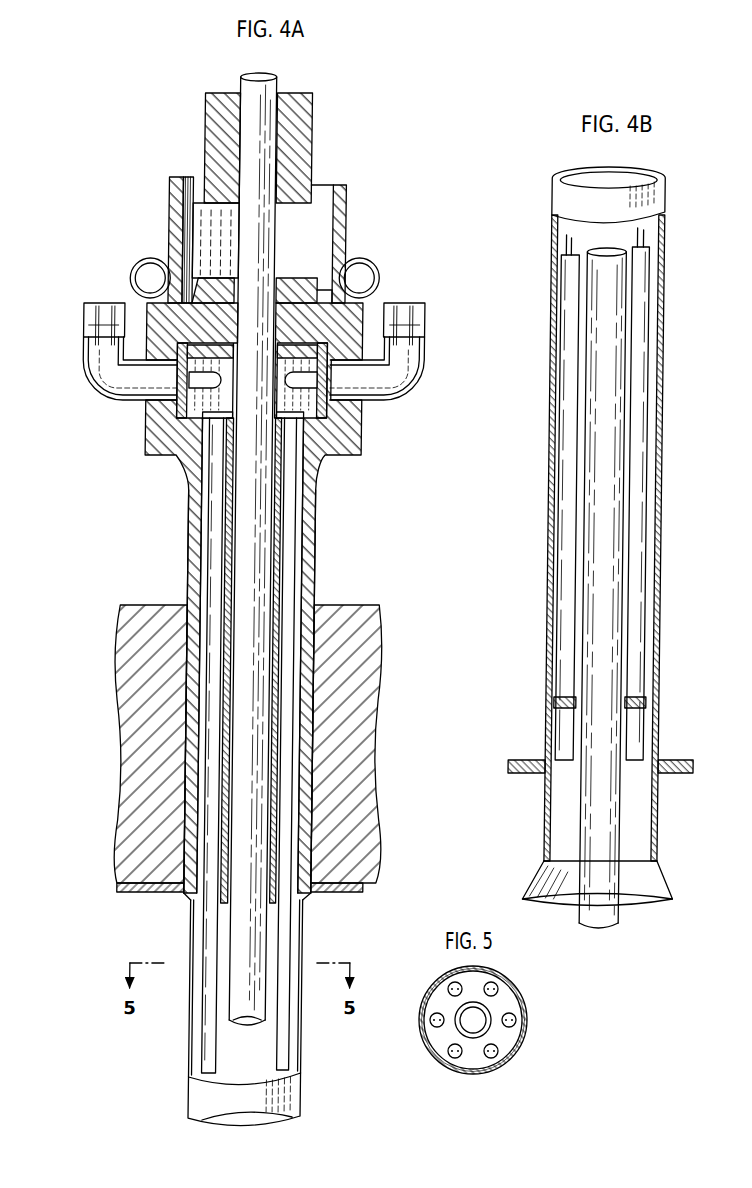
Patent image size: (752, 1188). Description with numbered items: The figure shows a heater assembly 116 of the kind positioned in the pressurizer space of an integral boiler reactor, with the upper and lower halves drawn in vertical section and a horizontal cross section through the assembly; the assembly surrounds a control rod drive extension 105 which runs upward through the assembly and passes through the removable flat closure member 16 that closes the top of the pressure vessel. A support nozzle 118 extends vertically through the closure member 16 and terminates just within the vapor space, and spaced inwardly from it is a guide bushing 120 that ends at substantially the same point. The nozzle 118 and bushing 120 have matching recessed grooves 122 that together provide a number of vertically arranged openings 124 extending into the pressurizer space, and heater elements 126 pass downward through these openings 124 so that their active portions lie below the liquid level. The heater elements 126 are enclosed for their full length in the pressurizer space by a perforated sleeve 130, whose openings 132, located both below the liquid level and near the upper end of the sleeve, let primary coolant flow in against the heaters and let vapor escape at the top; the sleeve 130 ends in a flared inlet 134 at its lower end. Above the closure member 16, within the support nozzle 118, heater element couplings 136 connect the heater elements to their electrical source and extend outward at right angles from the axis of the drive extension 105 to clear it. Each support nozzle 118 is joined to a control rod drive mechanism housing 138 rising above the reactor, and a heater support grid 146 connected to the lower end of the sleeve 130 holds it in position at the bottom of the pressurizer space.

In FIG. 4A, the closure member 16 is at (133, 741).
In FIG. 4A, the control rod drive extension 105 is at (258, 939).
In FIG. 4B, the control rod drive extension 105 is at (597, 842).
In FIG. 5, the control rod drive extension 105 is at (461, 1010).
In FIG. 4A, the heater assembly 116 is at (128, 433).
In FIG. 4B, the heater assembly 116 is at (637, 538).
In FIG. 5, the heater assembly 116 is at (488, 1018).
In FIG. 4A, the support nozzle 118 is at (319, 554).
In FIG. 4A, the guide bushing 120 is at (279, 588).
In FIG. 4A, the recessed grooves 122 is at (229, 529).
In FIG. 4A, the openings 124 is at (210, 575).
In FIG. 4A, the heater elements 126 is at (295, 503).
In FIG. 4B, the heater elements 126 is at (569, 434).
In FIG. 5, the heater elements 126 is at (509, 1011).
In FIG. 4A, the perforated sleeve 130 is at (290, 1101).
In FIG. 4B, the perforated sleeve 130 is at (667, 235).
In FIG. 5, the perforated sleeve 130 is at (456, 1068).
In FIG. 4A, the openings 132 is at (197, 950).
In FIG. 4B, the openings 132 is at (668, 586).
In FIG. 5, the openings 132 is at (516, 1059).
In FIG. 4B, the flared inlet 134 is at (672, 890).
In FIG. 4A, the heater element couplings 136 is at (329, 412).
In FIG. 4A, the control rod drive mechanism housing 138 is at (347, 231).
In FIG. 4B, the heater support grid 146 is at (675, 762).